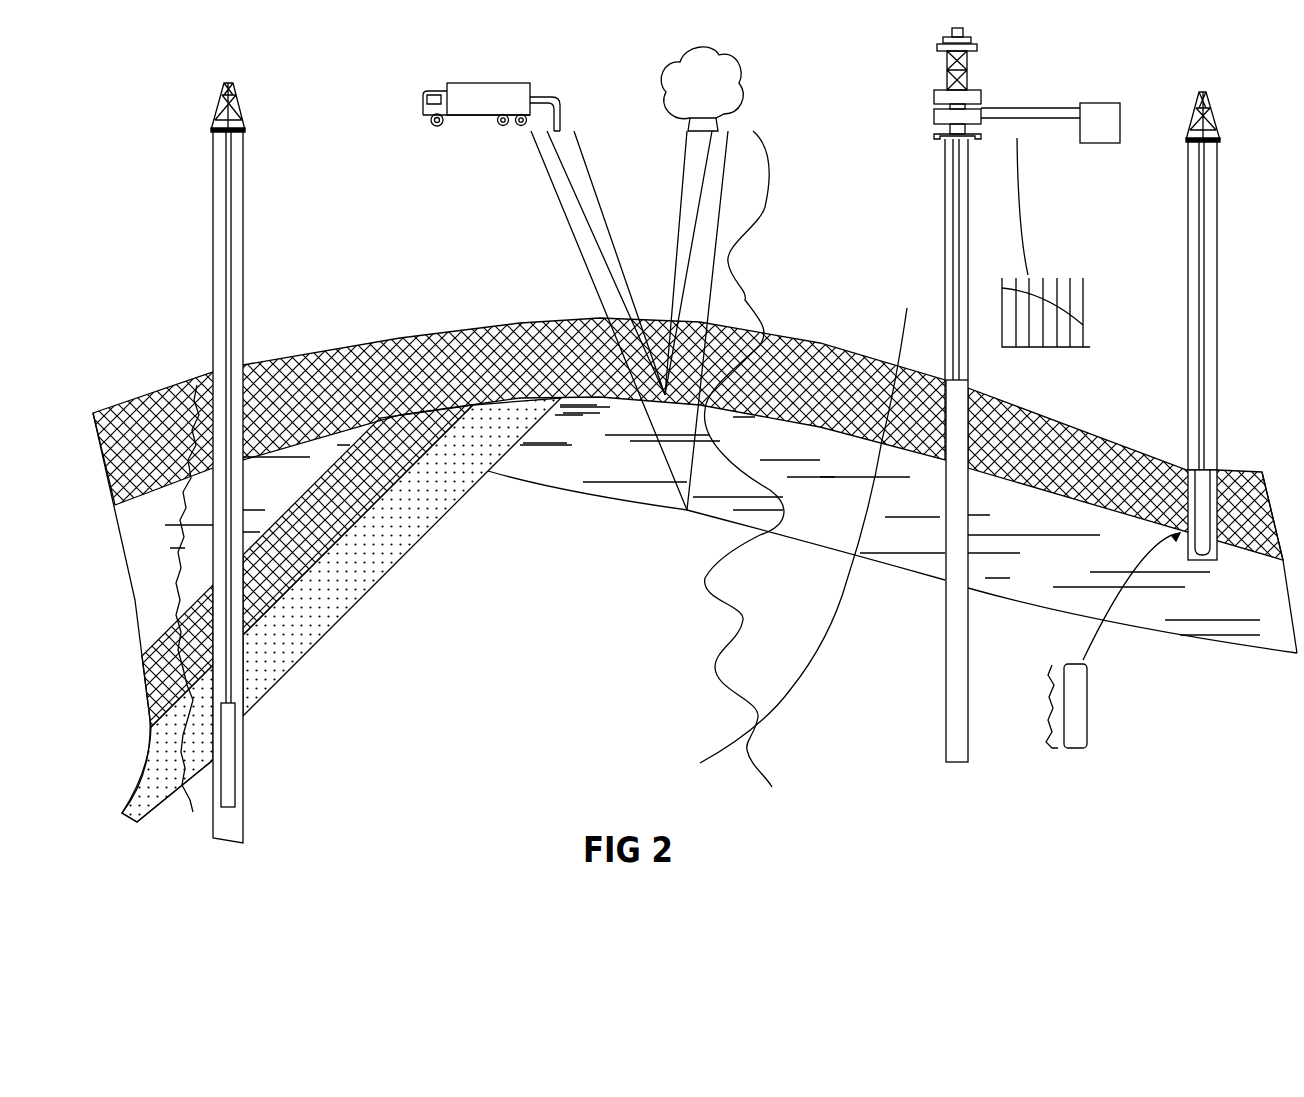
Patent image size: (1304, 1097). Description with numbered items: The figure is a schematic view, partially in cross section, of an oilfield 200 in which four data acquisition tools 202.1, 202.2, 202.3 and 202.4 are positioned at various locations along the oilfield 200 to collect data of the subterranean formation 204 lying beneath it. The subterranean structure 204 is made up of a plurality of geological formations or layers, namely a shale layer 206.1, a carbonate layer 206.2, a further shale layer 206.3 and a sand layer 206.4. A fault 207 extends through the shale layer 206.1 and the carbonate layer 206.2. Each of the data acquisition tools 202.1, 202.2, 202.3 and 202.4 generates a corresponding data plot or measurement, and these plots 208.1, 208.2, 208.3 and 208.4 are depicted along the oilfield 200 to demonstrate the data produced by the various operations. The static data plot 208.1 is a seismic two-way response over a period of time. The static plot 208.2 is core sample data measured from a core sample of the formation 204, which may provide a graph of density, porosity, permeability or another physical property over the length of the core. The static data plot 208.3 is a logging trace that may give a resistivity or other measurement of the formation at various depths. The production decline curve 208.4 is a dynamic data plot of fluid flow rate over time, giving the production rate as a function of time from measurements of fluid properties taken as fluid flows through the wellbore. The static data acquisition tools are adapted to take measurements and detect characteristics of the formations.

The oilfield 200 is at (1218, 317).
The data acquisition tool 202.1 is at (452, 82).
The data acquisition tool 202.2 is at (1212, 533).
The data acquisition tool 202.3 is at (237, 760).
The data acquisition tool 202.4 is at (946, 440).
The subterranean formation 204 is at (554, 593).
The shale layer 206.1 is at (482, 379).
The carbonate layer 206.2 is at (292, 491).
The shale layer 206.3 is at (360, 511).
The sand layer 206.4 is at (425, 529).
The fault 207 is at (905, 322).
The static data plot 208.1 is at (738, 633).
The static plot 208.2 is at (1052, 680).
The static data plot 208.3 is at (185, 538).
The production decline curve 208.4 is at (1042, 348).